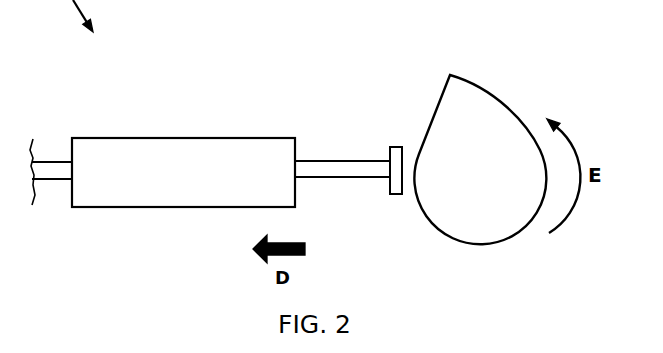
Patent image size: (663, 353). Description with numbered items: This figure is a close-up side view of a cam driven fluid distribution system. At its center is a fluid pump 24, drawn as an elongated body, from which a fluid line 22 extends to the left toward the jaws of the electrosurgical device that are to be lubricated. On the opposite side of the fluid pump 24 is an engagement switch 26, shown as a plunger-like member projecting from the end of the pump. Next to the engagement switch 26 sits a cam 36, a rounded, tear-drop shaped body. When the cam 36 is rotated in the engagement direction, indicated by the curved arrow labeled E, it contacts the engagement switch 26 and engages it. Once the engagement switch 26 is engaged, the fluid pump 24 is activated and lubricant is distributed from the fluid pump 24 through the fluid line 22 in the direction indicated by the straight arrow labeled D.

The fluid line 22 is at (53, 170).
The fluid pump 24 is at (153, 153).
The engagement switch 26 is at (385, 172).
The cam 36 is at (489, 206).